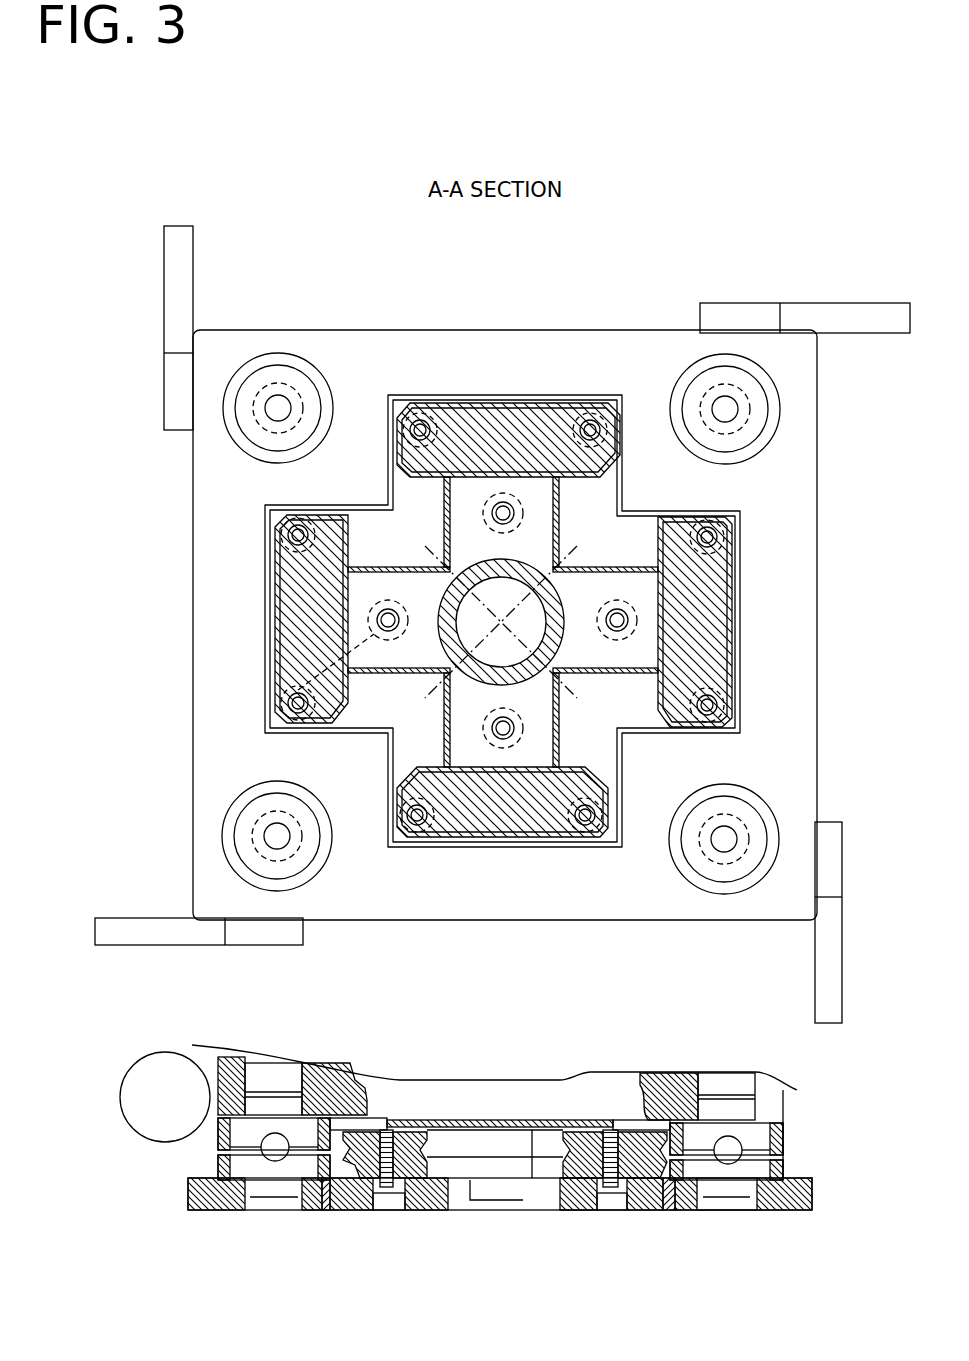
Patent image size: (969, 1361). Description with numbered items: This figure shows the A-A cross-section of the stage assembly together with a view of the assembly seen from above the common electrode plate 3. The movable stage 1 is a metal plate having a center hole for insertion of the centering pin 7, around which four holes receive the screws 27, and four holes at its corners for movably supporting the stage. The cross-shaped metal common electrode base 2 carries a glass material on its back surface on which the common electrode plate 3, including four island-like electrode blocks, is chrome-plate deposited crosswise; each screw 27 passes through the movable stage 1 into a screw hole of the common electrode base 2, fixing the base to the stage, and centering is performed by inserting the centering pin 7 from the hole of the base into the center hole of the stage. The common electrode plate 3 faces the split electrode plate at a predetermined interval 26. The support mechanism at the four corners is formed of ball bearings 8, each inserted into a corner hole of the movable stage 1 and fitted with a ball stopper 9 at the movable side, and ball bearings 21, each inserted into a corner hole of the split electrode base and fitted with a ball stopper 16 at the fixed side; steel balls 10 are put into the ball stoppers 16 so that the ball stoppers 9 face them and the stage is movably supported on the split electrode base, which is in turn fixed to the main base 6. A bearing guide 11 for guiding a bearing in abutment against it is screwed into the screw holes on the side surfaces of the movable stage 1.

The movable stage 1 is at (577, 348).
The common electrode base 2 is at (642, 523).
The common electrode plate 3 is at (473, 836).
The main base 6 is at (772, 820).
The centering pin 7 is at (637, 657).
The ball bearing 8 is at (732, 1197).
The ball stopper at the movable side 9 is at (777, 1173).
The steel ball 10 is at (745, 845).
The bearing guide 11 is at (164, 292).
The ball stopper at the fixed side 16 is at (780, 1130).
The ball bearing 21 is at (738, 807).
The predetermined interval 26 is at (432, 1115).
The screw 27 is at (483, 740).